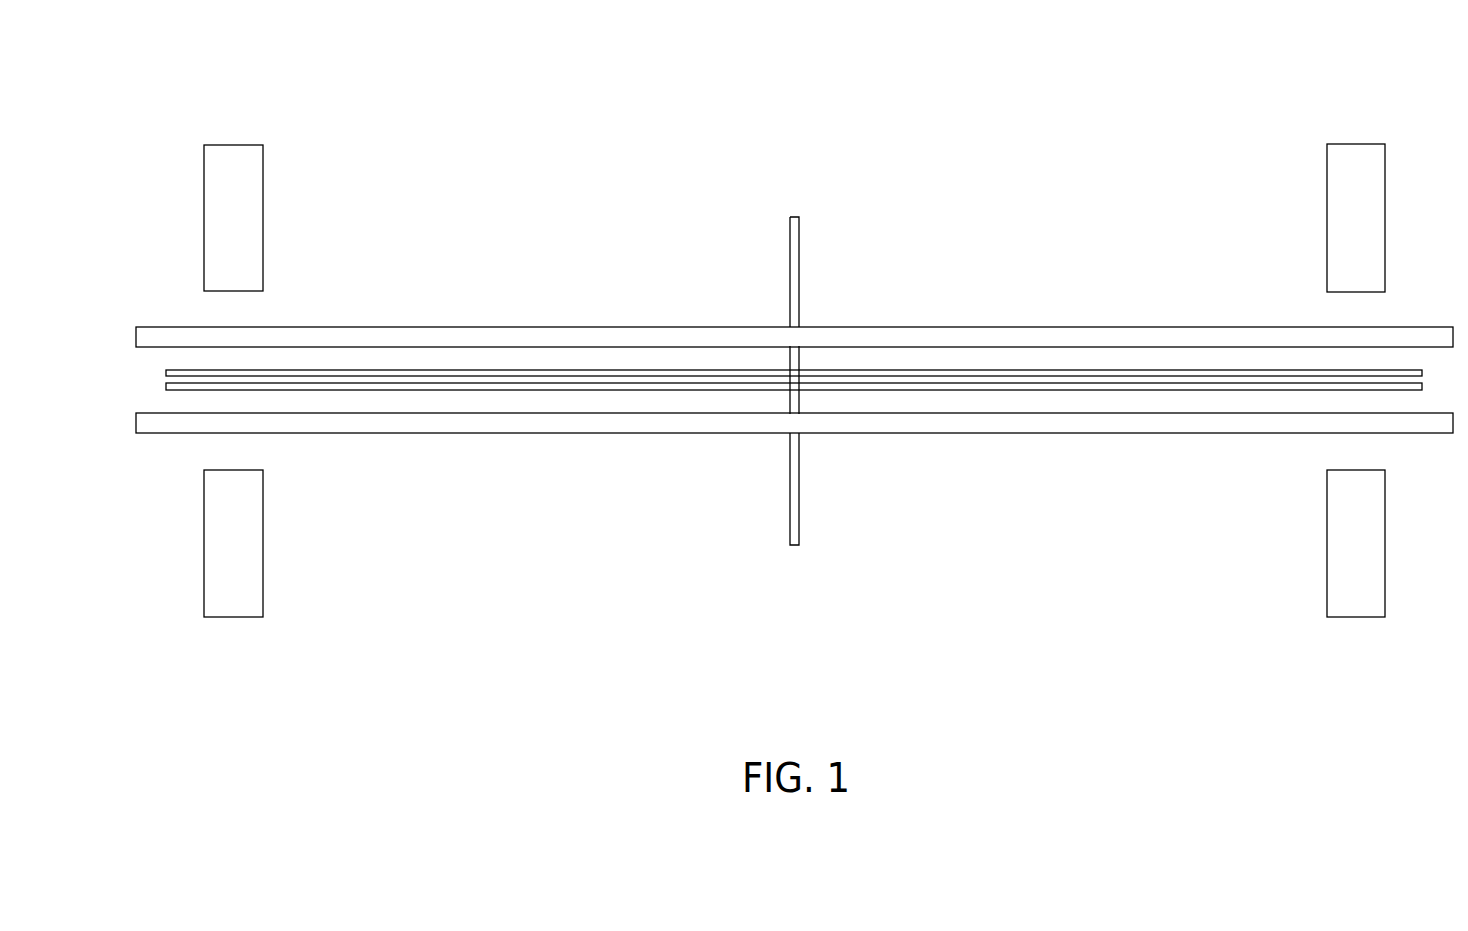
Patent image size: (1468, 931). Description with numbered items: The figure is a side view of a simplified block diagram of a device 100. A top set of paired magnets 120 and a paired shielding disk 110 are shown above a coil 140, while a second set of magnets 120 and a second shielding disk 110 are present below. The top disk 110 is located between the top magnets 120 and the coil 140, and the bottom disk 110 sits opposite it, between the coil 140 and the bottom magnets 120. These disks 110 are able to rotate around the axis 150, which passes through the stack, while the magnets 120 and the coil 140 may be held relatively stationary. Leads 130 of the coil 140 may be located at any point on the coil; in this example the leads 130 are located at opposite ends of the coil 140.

The device 100 is at (186, 92).
The shielding disk 110 is at (573, 327).
The magnets 120 is at (263, 232).
The leads 130 is at (752, 420).
The coil 140 is at (938, 392).
The axis 150 is at (798, 217).